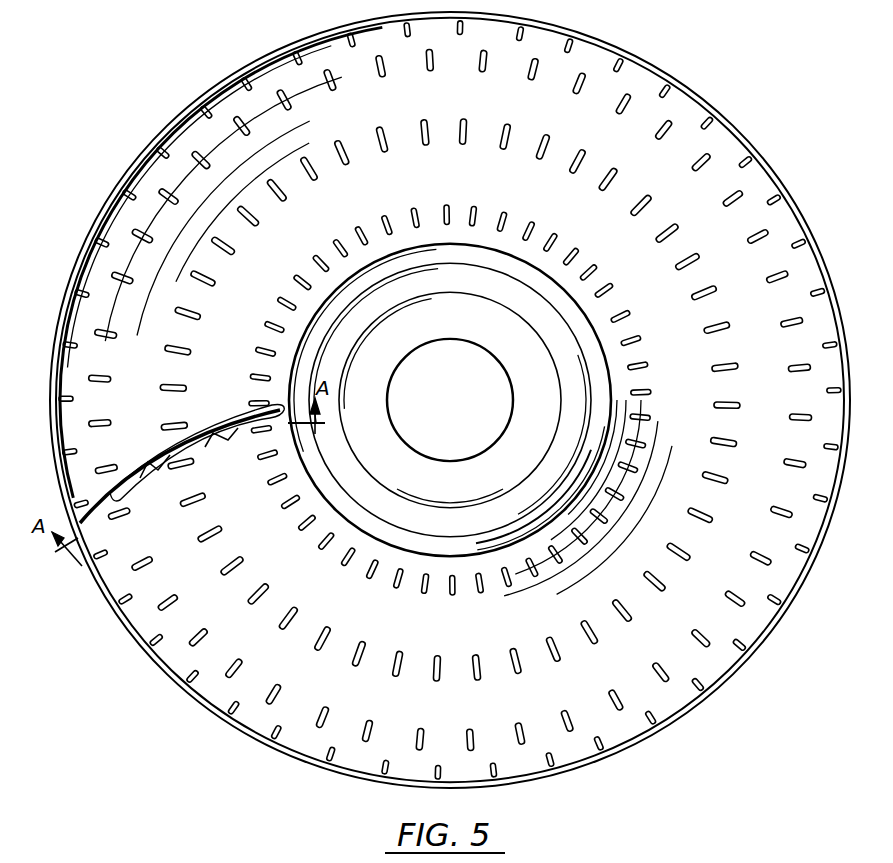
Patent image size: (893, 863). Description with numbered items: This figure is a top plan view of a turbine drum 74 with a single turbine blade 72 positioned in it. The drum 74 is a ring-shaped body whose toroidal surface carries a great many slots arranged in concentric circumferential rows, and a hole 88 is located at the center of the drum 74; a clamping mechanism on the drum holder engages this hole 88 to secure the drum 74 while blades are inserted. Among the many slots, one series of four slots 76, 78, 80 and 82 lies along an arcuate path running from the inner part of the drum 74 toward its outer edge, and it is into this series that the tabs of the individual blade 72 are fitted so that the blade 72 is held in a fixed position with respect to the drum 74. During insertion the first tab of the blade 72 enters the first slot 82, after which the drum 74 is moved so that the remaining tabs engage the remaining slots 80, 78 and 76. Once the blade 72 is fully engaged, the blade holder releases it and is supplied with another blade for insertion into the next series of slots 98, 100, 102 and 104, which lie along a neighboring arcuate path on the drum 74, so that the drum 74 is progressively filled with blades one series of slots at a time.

The turbine blade 72 is at (110, 490).
The turbine drum 74 is at (250, 305).
The slot 76 is at (450, 411).
The slot 78 is at (450, 400).
The slot 80 is at (450, 399).
The slot 82 is at (450, 416).
The hole 88 is at (450, 400).
The slot 98 is at (300, 548).
The slot 100 is at (260, 623).
The slot 102 is at (271, 673).
The slot 104 is at (450, 400).